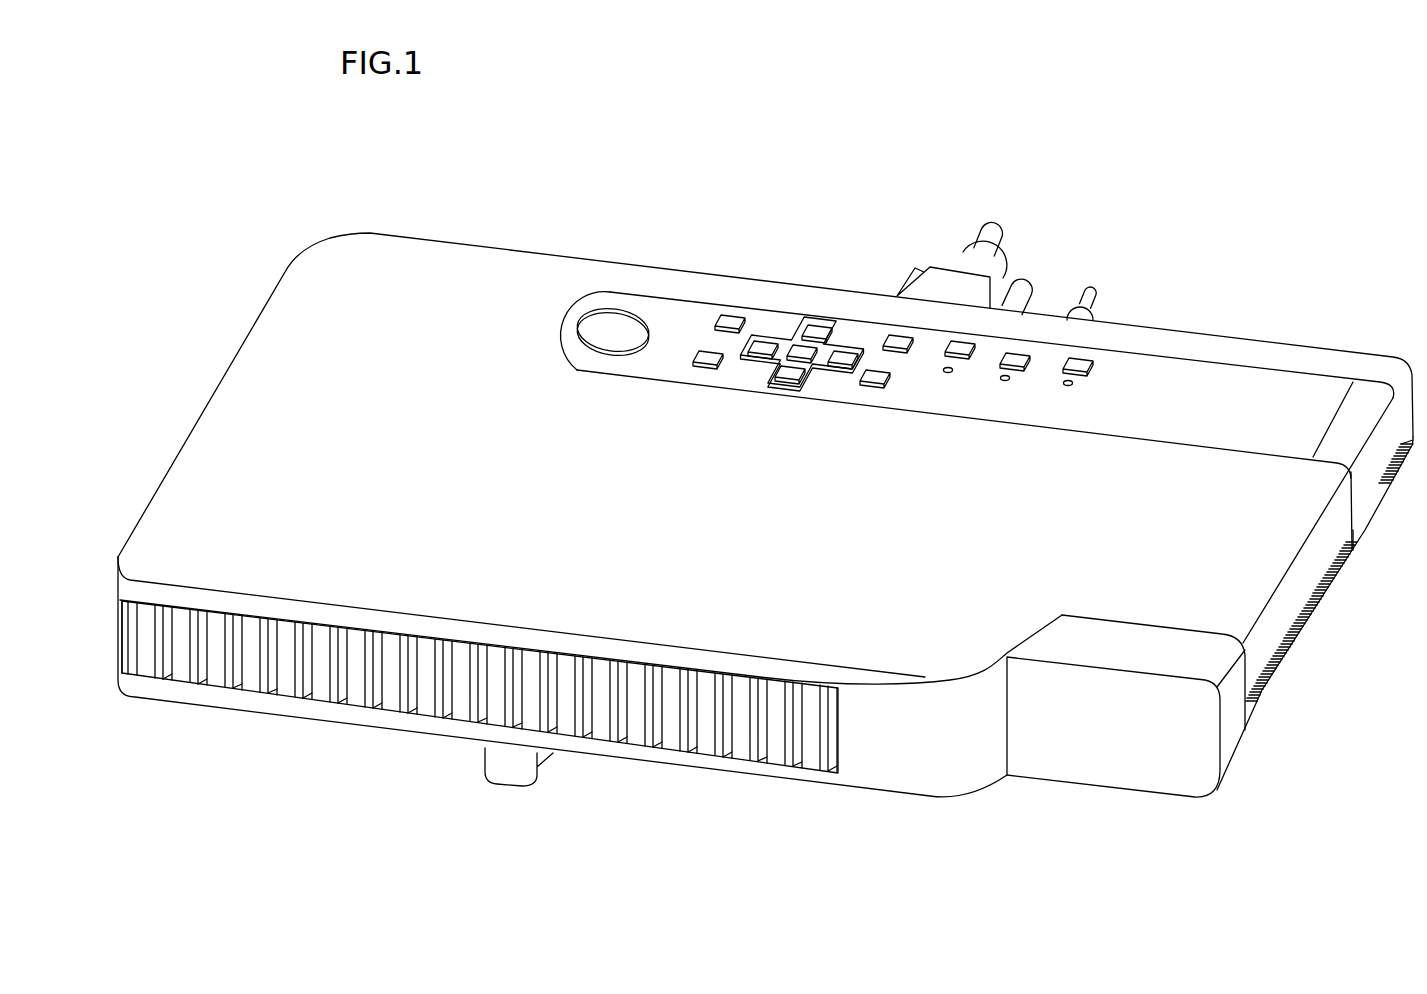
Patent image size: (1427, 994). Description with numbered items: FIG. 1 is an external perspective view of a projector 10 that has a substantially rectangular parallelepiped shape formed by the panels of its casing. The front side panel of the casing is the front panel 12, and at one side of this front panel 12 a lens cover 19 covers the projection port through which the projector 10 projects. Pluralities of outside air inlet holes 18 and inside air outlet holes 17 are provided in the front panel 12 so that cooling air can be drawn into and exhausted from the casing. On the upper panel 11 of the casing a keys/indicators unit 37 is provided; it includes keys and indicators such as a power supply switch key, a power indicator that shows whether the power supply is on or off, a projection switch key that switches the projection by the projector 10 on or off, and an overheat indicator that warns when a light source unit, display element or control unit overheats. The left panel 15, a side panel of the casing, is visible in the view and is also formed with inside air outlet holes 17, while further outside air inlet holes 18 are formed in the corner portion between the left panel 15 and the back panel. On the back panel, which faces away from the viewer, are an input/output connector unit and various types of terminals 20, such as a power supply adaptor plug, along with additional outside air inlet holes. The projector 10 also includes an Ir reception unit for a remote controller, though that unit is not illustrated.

The projector 10 is at (722, 172).
The upper panel 11 is at (512, 268).
The front panel 12 is at (886, 752).
The left panel 15 is at (1303, 583).
The inside air outlet holes 17 is at (345, 690).
The outside air inlet holes 18 is at (762, 752).
The lens cover 19 is at (1158, 763).
The terminals 20 is at (1042, 217).
The keys/indicators unit 37 is at (814, 259).